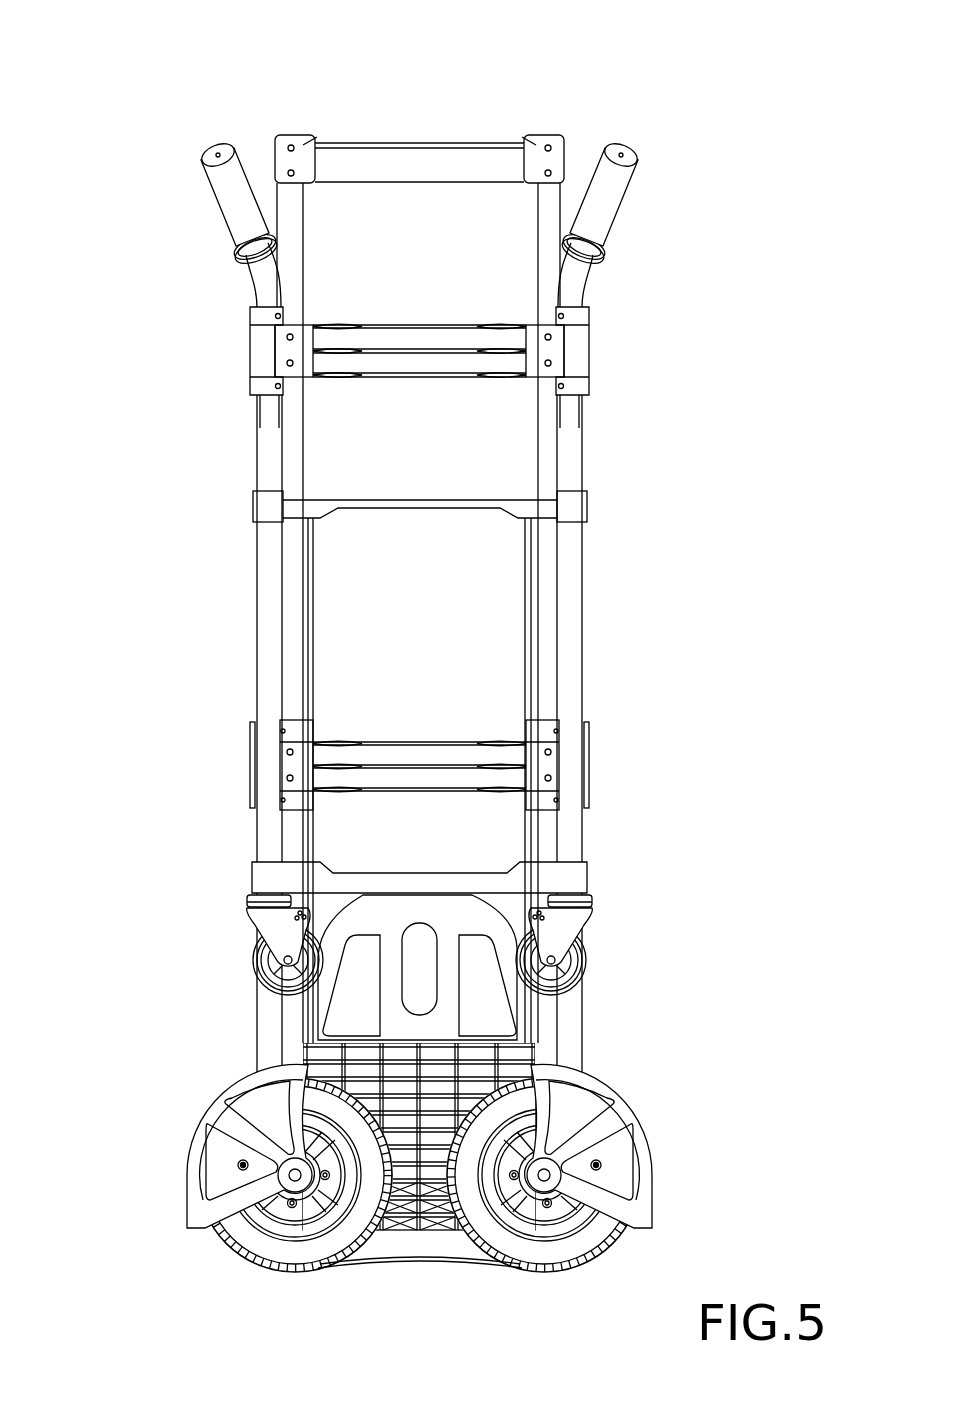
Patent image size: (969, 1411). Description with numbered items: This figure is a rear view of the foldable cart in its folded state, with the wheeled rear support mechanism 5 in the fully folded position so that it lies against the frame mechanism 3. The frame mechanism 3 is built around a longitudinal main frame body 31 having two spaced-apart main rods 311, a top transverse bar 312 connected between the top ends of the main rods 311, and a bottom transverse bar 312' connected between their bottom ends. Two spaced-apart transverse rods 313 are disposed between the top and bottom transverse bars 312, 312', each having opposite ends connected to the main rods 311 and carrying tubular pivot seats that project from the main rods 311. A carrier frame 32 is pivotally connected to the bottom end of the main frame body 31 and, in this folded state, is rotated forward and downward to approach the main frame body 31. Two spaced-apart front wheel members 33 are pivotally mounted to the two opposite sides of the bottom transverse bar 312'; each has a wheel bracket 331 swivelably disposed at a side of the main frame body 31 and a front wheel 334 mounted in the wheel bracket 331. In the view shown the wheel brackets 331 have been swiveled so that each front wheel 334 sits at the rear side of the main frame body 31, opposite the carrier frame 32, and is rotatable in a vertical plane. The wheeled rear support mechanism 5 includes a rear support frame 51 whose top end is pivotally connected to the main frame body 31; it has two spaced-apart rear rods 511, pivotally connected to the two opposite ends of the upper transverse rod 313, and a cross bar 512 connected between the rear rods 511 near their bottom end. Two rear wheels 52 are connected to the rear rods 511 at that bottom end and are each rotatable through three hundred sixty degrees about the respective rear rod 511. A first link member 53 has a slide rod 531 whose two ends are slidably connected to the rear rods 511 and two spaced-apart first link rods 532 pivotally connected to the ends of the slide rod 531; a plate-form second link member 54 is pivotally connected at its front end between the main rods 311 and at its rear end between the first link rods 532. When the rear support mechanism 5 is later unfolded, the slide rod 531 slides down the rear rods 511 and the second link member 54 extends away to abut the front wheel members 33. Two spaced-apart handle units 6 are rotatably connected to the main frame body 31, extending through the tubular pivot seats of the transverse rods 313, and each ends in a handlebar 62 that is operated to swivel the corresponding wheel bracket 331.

The frame mechanism 3 is at (423, 114).
The main frame body 31 is at (370, 141).
The main rods 311 is at (287, 207).
The top transverse bar 312 is at (419, 119).
The bottom transverse bar 312' is at (420, 1270).
The transverse rods 313 is at (578, 340).
The carrier frame 32 is at (402, 903).
The front wheel members 33 is at (196, 1104).
The wheel bracket 331 is at (214, 1155).
The front wheel 334 is at (222, 1243).
The wheeled rear support mechanism 5 is at (600, 560).
The rear support frame 51 is at (590, 608).
The rear rods 511 is at (272, 622).
The cross bar 512 is at (478, 873).
The rear wheels 52 is at (283, 960).
The first link member 53 is at (300, 589).
The slide rod 531 is at (436, 503).
The first link rods 532 is at (312, 673).
The second link member 54 is at (433, 1075).
The handle units 6 is at (212, 188).
The handlebar 62 is at (245, 215).